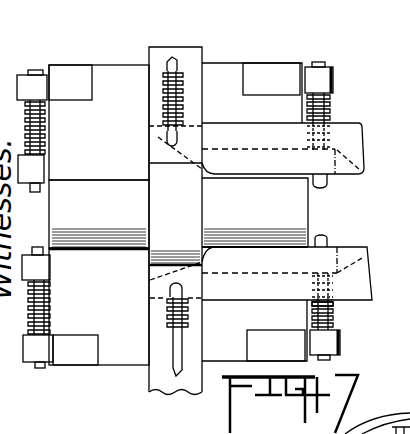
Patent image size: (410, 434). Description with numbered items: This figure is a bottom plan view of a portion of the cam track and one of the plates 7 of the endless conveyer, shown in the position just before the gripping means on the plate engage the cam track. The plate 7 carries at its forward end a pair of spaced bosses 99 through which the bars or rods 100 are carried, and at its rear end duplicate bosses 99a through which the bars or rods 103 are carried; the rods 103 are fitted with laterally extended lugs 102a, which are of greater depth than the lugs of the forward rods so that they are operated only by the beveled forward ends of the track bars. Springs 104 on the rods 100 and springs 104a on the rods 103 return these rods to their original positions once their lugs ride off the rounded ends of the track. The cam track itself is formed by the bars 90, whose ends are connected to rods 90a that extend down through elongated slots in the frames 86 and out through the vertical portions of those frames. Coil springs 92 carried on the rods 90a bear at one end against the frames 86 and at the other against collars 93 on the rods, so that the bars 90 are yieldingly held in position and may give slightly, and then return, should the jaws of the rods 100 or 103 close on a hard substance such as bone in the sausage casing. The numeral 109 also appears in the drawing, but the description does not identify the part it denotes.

The plate 7 is at (99, 214).
The frame 86 is at (150, 332).
The bar 90 is at (362, 168).
The rod 90a is at (174, 364).
The coil spring 92 is at (165, 91).
The collar 93 is at (163, 128).
The boss 99 is at (357, 63).
The boss 99a is at (33, 85).
The bar or rod 100 is at (315, 357).
The lug 102a is at (37, 265).
The bar or rod 103 is at (43, 363).
The spring 104 is at (313, 315).
The spring 104a is at (52, 307).
The lever (adjacent figure) 109 is at (409, 388).